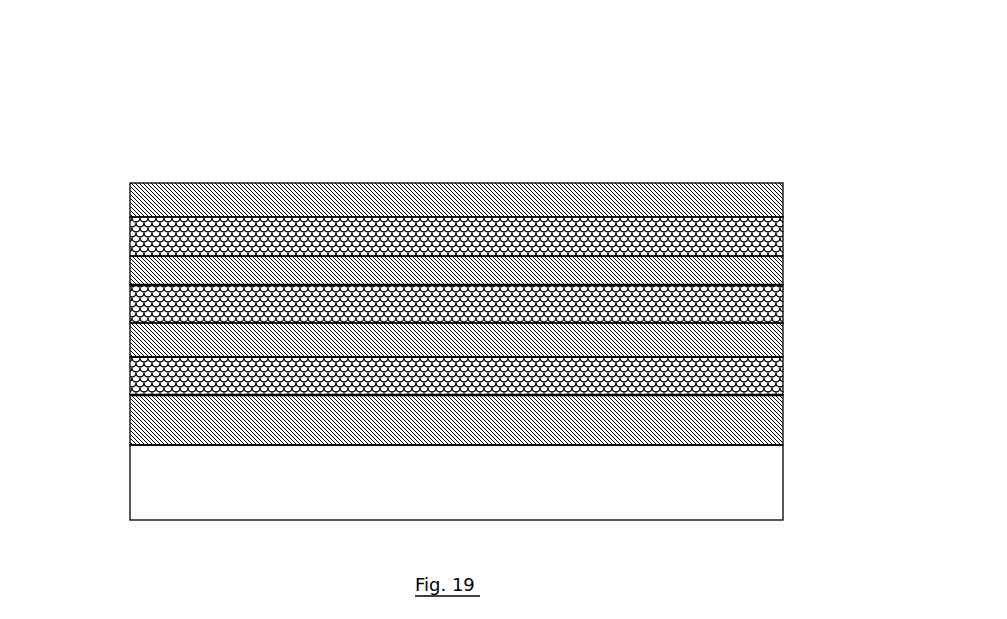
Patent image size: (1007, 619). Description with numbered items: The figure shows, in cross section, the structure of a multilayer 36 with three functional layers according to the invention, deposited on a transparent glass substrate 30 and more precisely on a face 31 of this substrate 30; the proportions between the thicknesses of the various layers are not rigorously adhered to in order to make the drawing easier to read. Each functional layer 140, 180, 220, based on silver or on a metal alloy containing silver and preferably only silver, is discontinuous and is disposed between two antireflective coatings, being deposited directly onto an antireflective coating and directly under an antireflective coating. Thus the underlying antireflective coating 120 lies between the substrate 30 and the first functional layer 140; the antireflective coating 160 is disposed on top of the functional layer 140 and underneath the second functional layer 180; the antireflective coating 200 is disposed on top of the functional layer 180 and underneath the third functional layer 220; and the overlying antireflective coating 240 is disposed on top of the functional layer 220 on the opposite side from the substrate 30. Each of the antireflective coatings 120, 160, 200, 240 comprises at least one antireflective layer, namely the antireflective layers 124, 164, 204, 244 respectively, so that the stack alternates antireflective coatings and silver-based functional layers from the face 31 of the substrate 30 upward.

The multilayer 36 is at (163, 115).
The transparent glass substrate 30 is at (461, 469).
The face 31 is at (737, 435).
The underlying antireflective coating 120 is at (788, 388).
The antireflective layer 124 is at (141, 420).
The functional layer 140 is at (141, 375).
The antireflective coating 160 is at (788, 316).
The antireflective layer 164 is at (141, 337).
The functional layer 180 is at (146, 302).
The antireflective coating 200 is at (788, 244).
The antireflective layer 204 is at (146, 272).
The functional layer 220 is at (146, 234).
The overlying antireflective coating 240 is at (788, 175).
The antireflective layer 244 is at (141, 187).